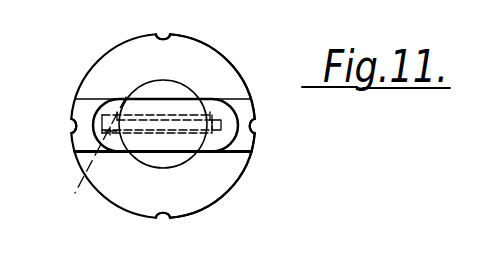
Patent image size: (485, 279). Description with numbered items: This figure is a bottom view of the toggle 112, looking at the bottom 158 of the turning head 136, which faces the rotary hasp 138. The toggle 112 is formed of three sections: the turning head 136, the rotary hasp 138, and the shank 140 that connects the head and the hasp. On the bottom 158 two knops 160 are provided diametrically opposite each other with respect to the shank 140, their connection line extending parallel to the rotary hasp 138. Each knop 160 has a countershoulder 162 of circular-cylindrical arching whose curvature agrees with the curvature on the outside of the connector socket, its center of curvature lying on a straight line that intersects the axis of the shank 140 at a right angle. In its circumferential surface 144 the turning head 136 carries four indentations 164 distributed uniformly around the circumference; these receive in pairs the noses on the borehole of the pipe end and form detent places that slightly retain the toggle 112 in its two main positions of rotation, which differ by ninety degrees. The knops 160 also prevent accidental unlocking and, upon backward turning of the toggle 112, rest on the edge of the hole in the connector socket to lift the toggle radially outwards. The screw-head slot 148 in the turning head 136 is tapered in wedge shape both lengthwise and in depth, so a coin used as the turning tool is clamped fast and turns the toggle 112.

The toggle 112 is at (250, 257).
The turning head 136 is at (226, 55).
The rotary hasp 138 is at (152, 155).
The shank 140 is at (146, 88).
The circumferential surface 144 is at (235, 183).
The screw-head slot 148 is at (84, 161).
The bottom 158 is at (185, 70).
The knops 160 is at (85, 98).
The countershoulder 162 is at (83, 113).
The indentations 164 is at (168, 32).